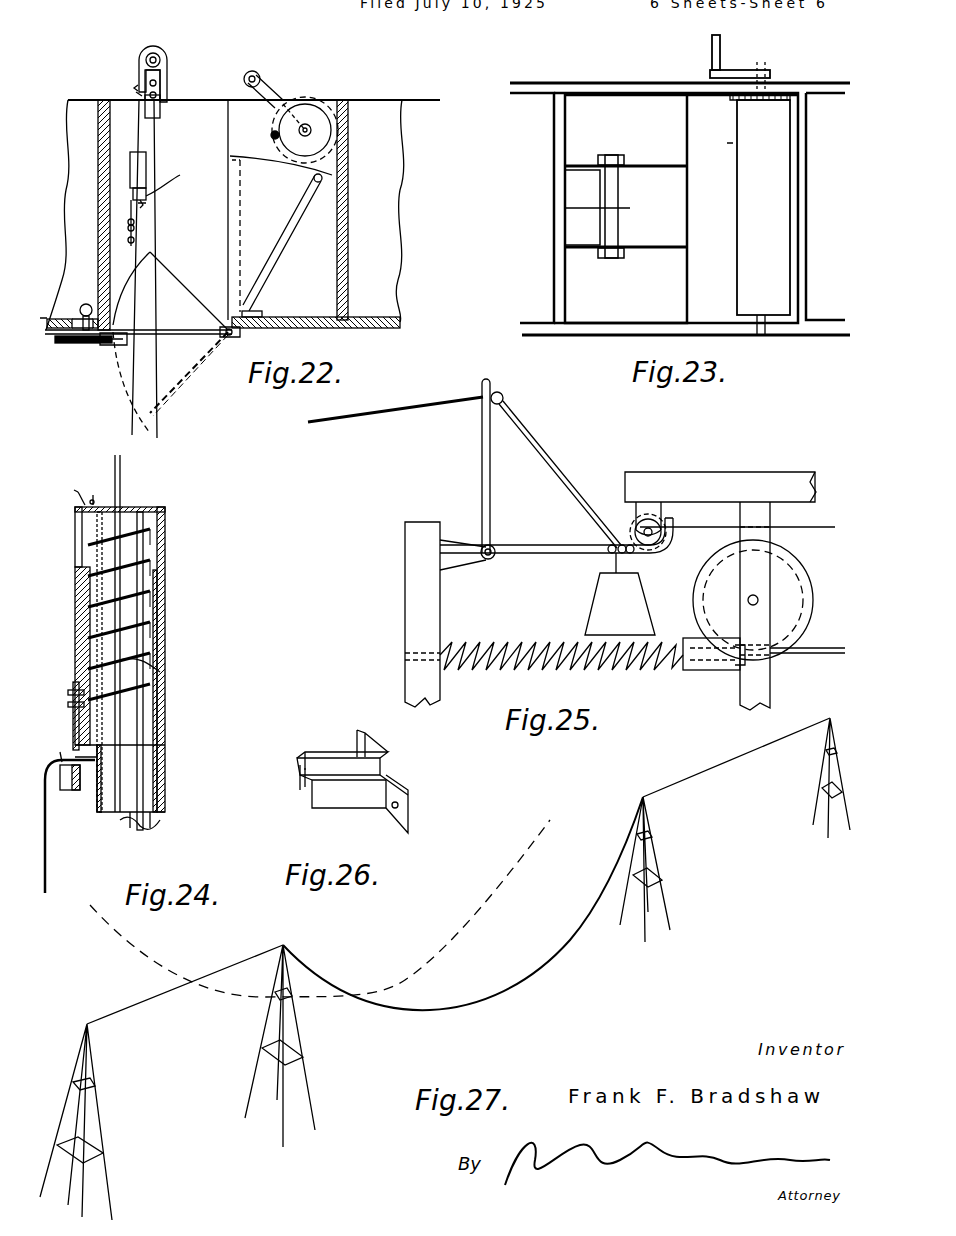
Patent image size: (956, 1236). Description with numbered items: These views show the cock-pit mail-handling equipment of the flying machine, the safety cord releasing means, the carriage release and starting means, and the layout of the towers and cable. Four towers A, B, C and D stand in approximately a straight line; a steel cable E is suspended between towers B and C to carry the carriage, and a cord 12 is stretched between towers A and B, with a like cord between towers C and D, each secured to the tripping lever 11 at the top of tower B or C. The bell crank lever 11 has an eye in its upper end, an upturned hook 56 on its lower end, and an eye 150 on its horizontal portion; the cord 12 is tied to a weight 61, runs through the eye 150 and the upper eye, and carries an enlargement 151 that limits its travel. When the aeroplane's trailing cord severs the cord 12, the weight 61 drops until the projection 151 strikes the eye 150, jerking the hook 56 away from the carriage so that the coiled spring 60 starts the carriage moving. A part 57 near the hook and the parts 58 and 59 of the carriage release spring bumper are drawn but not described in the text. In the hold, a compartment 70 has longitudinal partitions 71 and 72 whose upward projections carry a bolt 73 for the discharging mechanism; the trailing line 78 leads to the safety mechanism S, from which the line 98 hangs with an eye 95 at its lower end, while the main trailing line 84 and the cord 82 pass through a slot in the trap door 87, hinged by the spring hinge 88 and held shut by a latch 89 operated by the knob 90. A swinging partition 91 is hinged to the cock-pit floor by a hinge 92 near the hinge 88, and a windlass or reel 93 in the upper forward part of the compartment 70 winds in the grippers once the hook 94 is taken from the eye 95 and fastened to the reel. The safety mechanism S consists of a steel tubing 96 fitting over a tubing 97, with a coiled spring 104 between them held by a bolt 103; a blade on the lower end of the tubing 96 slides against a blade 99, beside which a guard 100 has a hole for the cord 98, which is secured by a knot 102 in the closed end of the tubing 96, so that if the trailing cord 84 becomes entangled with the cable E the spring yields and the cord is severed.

In FIG. 22, the bolt 73 is at (155, 50).
In FIG. 23, the bolt 73 is at (612, 190).
In FIG. 22, the trailing line 78 is at (139, 133).
In FIG. 24, the trailing line 78 is at (120, 480).
In FIG. 22, the safety mechanism S is at (138, 178).
In FIG. 24, the safety mechanism S is at (167, 560).
In FIG. 22, the line 98 is at (143, 210).
In FIG. 24, the line 98 is at (50, 865).
In FIG. 22, the cord or cable 82 is at (148, 225).
In FIG. 22, the hook 94 is at (126, 225).
In FIG. 22, the eye 95 is at (134, 235).
In FIG. 22, the knob 90 is at (85, 304).
In FIG. 22, the swinging partition 91 is at (284, 226).
In FIG. 22, the hinge 92 is at (262, 312).
In FIG. 22, the latch 89 is at (72, 345).
In FIG. 22, the main trailing line 84 is at (130, 430).
In FIG. 22, the spring hinge 88 is at (230, 340).
In FIG. 22, the trap door 87 is at (176, 392).
In FIG. 23, the longitudinal partition 71 is at (645, 163).
In FIG. 23, the compartment 70 is at (742, 148).
In FIG. 23, the windlass or reel 93 is at (765, 250).
In FIG. 23, the longitudinal partition 72 is at (640, 265).
In FIG. 24, the knot 102 is at (90, 498).
In FIG. 24, the bolt 103 is at (130, 500).
In FIG. 24, the tubing 96 is at (167, 645).
In FIG. 24, the spring 104 is at (160, 672).
In FIG. 24, the guard 100 is at (49, 756).
In FIG. 24, the tubing 97 is at (167, 780).
In FIG. 24, the blade 99 is at (68, 795).
In FIG. 25, the enlargement 151 is at (505, 397).
In FIG. 25, the cord 12 is at (362, 417).
In FIG. 27, the cord 12 is at (148, 1005).
In FIG. 25, the bell crank lever 11 is at (480, 458).
In FIG. 25, the roller 57 is at (638, 522).
In FIG. 25, the upturned hook 56 is at (673, 537).
In FIG. 25, the eye 150 is at (635, 556).
In FIG. 25, the tower B is at (415, 618).
In FIG. 27, the tower B is at (295, 1070).
In FIG. 25, the weight 61 is at (620, 594).
In FIG. 25, the coiled spring 60 is at (562, 645).
In FIG. 25, the steel cable E is at (822, 648).
In FIG. 27, the steel cable E is at (485, 993).
In FIG. 25, the block 58 is at (712, 672).
In FIG. 26, the block 58 is at (335, 756).
In FIG. 26, the slot 59 is at (300, 780).
In FIG. 27, the tower A is at (90, 1142).
In FIG. 27, the tower C is at (657, 895).
In FIG. 27, the tower D is at (828, 800).